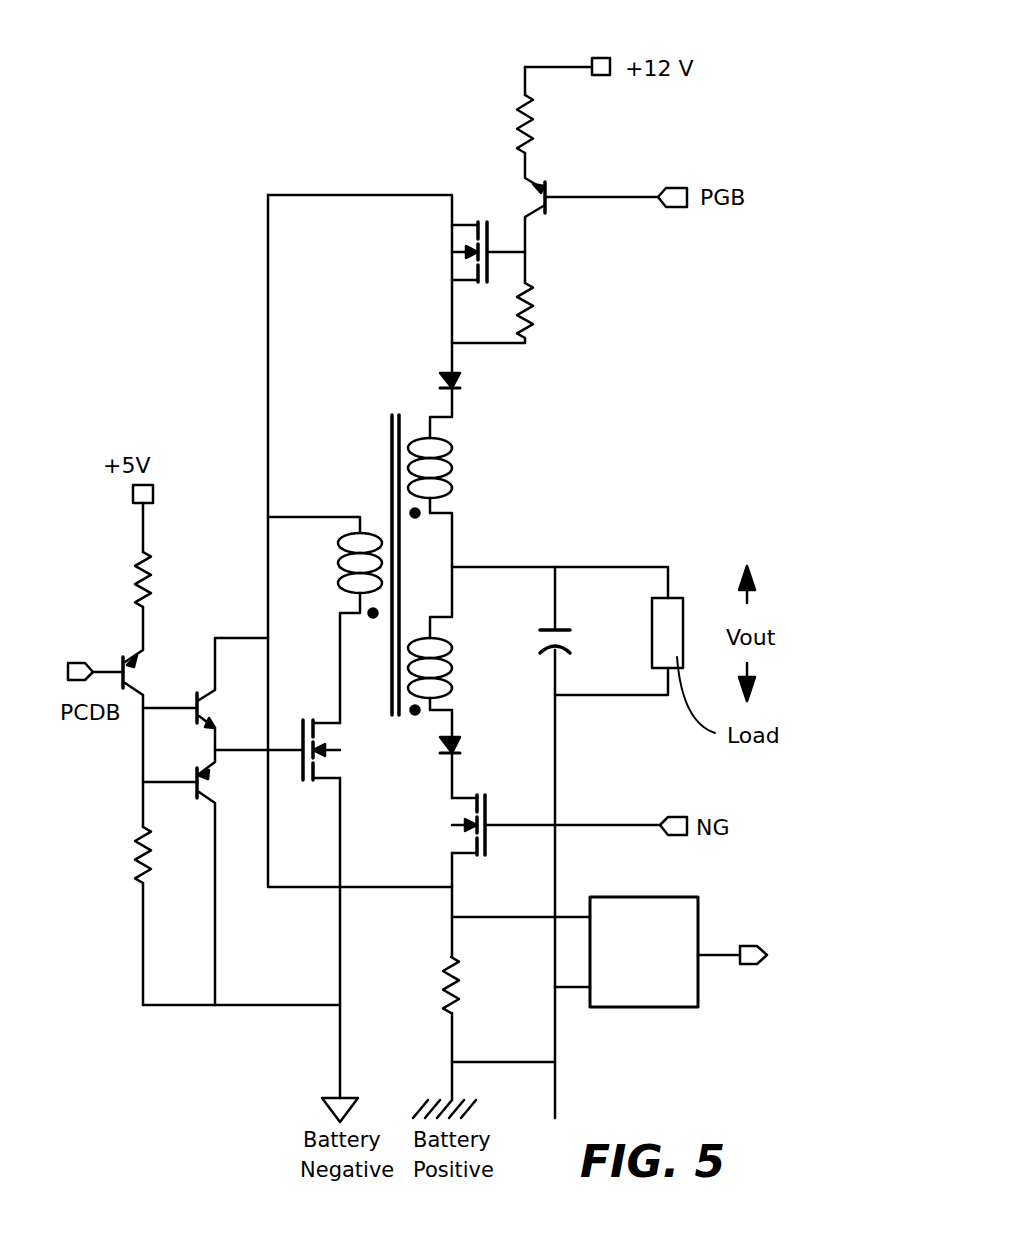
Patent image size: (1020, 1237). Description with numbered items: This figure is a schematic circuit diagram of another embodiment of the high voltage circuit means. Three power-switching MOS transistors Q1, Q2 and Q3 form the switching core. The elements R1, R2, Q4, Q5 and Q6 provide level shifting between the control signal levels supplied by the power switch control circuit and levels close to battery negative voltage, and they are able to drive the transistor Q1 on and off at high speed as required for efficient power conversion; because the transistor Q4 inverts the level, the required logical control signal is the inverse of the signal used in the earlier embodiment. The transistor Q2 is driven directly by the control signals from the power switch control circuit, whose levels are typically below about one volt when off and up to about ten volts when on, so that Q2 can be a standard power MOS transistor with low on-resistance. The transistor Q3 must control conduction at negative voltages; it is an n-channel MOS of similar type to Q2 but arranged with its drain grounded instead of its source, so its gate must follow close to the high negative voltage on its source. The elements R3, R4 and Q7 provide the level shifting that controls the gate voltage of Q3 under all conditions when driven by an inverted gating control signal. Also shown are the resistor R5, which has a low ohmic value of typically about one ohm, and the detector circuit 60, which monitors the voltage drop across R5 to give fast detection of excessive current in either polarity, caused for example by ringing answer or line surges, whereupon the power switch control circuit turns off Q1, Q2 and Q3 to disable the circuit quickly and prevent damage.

The detector circuit 60 is at (627, 987).
The power-switching MOS transistor Q1 is at (343, 750).
The power-switching MOS transistor Q2 is at (449, 825).
The power-switching MOS transistor Q3 is at (451, 252).
The level shifting transistor Q4 is at (149, 671).
The level shifting transistor Q5 is at (222, 710).
The level shifting transistor Q6 is at (222, 785).
The level shifting transistor Q7 is at (519, 197).
The resistor R1 is at (163, 579).
The resistor R2 is at (163, 855).
The resistor R3 is at (544, 124).
The resistor R4 is at (544, 309).
The resistor R5 is at (470, 985).